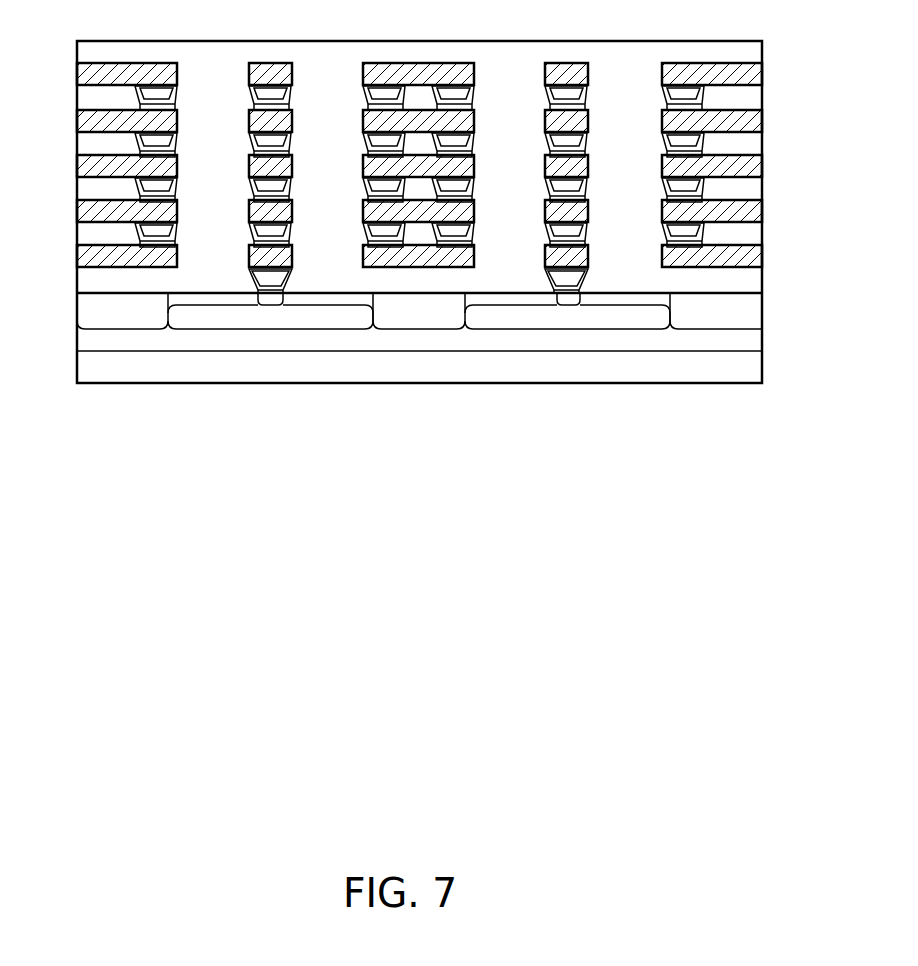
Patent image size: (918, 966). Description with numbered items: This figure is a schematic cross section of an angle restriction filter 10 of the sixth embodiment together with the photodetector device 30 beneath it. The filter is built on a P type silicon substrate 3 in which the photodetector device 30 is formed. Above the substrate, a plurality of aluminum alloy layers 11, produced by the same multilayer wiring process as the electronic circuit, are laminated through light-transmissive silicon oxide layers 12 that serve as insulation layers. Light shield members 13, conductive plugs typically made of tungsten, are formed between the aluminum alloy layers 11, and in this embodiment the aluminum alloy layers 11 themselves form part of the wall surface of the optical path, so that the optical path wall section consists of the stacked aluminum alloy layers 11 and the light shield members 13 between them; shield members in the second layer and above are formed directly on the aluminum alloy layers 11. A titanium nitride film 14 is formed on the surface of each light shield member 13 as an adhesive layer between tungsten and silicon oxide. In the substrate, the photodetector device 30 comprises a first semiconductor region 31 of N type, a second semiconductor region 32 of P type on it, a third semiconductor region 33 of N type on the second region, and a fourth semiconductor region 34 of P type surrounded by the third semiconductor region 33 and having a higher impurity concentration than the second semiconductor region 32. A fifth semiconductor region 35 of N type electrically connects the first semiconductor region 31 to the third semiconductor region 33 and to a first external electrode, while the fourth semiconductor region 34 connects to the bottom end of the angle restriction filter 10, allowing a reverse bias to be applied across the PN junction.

The P type silicon substrate 3 is at (752, 366).
The angle restriction filter 10 is at (417, 178).
The aluminum alloy layers 11 is at (752, 259).
The silicon oxide layers 12 is at (752, 98).
The light shield members 13 is at (150, 93).
The titanium nitride film 14 is at (150, 140).
The photodetector device 30 is at (418, 383).
The first semiconductor region 31 is at (752, 340).
The second semiconductor region 32 is at (193, 317).
The third semiconductor region 33 is at (237, 300).
The fourth semiconductor region 34 is at (275, 298).
The fifth semiconductor region 35 is at (123, 312).